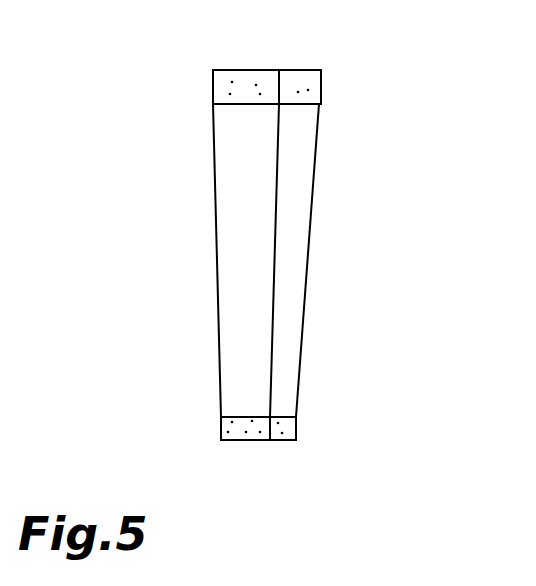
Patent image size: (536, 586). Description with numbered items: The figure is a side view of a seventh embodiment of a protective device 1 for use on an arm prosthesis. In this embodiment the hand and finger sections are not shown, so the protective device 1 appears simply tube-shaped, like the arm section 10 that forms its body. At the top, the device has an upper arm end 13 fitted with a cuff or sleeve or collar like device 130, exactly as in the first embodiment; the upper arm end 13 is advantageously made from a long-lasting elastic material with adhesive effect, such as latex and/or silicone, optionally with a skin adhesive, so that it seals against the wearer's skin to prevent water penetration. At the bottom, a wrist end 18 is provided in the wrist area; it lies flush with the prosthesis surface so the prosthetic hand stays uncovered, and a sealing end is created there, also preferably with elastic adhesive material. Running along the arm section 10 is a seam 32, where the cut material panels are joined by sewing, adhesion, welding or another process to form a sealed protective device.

The protective device 1 is at (148, 40).
The arm section 10 is at (205, 231).
The upper arm end 13 is at (212, 95).
The wrist end 18 is at (220, 432).
The seam 32 is at (276, 273).
The cuff or sleeve or collar like device 130 is at (312, 90).